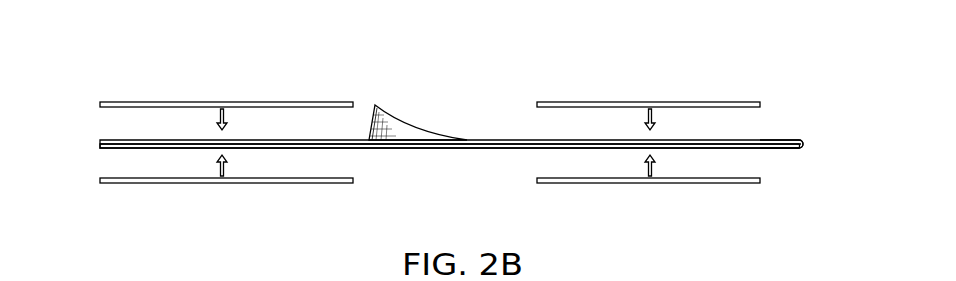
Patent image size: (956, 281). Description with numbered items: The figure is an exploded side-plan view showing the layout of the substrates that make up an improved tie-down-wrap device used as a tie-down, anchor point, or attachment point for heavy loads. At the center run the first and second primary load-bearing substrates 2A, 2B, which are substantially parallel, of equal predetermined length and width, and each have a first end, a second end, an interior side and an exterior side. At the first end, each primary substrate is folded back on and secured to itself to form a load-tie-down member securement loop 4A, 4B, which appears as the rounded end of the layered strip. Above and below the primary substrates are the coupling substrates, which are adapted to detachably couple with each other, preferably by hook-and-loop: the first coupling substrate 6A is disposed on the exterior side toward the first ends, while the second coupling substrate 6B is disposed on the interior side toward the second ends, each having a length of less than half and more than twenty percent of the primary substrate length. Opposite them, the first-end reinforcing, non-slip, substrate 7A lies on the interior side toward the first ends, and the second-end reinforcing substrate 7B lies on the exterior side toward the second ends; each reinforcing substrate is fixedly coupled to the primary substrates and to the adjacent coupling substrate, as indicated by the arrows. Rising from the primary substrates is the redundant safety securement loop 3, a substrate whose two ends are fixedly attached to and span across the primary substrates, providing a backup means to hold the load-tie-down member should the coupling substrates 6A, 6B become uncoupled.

The first primary load-bearing substrate 2A is at (96, 139).
The second primary load-bearing substrate 2B is at (96, 139).
The redundant safety securement loop 3 is at (388, 124).
The load-tie-down member securement loop 4A is at (789, 138).
The load-tie-down member securement loop 4B is at (789, 138).
The first coupling substrate 6A is at (532, 181).
The second coupling substrate 6B is at (170, 101).
The first-end reinforcing non-slip substrate 7A is at (535, 103).
The second-end reinforcing substrate 7B is at (173, 184).